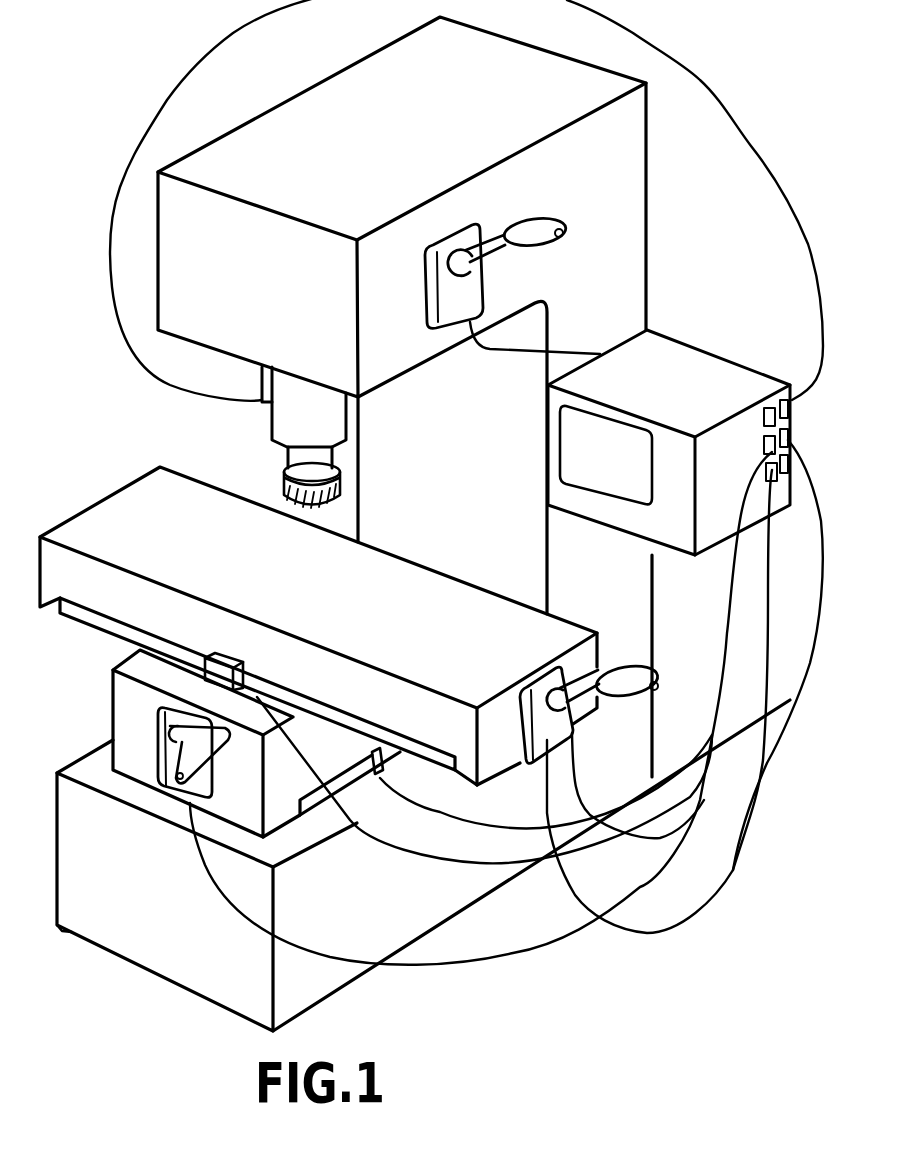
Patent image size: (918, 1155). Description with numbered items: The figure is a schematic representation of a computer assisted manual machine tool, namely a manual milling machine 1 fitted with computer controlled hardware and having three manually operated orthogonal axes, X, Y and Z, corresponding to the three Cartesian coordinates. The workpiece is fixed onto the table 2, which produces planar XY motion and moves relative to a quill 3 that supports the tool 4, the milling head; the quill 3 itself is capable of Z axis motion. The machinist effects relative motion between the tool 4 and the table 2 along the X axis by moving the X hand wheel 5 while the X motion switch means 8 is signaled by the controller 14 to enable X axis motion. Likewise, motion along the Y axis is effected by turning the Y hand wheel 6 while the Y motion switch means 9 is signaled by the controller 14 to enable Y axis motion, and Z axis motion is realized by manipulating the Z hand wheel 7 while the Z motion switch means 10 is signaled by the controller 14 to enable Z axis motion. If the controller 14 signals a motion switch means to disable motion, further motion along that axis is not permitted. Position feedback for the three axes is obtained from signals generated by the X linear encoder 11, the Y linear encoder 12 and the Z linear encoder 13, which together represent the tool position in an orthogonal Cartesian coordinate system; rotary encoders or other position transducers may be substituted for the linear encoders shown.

The manual milling machine 1 is at (500, 105).
The table 2 is at (140, 482).
The quill 3 is at (345, 444).
The tool 4 is at (340, 497).
The X hand wheel 5 is at (653, 675).
The Y hand wheel 6 is at (233, 748).
The Z hand wheel 7 is at (536, 224).
The X motion switch means 8 is at (560, 745).
The Y motion switch means 9 is at (157, 760).
The Z motion switch means 10 is at (478, 296).
The X linear encoder 11 is at (236, 662).
The Y linear encoder 12 is at (380, 751).
The Z linear encoder 13 is at (262, 371).
The controller 14 is at (688, 365).